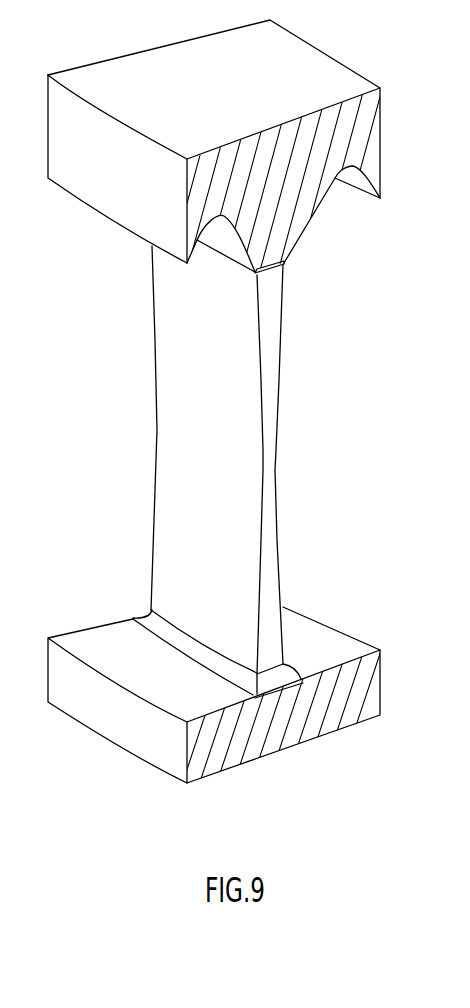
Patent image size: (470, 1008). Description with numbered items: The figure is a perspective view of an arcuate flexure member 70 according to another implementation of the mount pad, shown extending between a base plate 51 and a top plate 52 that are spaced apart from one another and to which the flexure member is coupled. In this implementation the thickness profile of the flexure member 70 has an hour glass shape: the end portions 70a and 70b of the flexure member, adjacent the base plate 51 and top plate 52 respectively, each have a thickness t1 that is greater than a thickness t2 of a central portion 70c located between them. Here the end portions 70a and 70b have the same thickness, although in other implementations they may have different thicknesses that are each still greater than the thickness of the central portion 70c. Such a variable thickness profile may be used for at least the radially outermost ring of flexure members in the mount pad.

The base plate 51 is at (373, 697).
The top plate 52 is at (370, 132).
The arcuate flexure member 70 is at (211, 467).
The end portion 70a is at (270, 610).
The end portion 70b is at (283, 290).
The central portion 70c is at (277, 420).
The end portion thickness t1 is at (195, 347).
The central portion thickness t2 is at (202, 493).